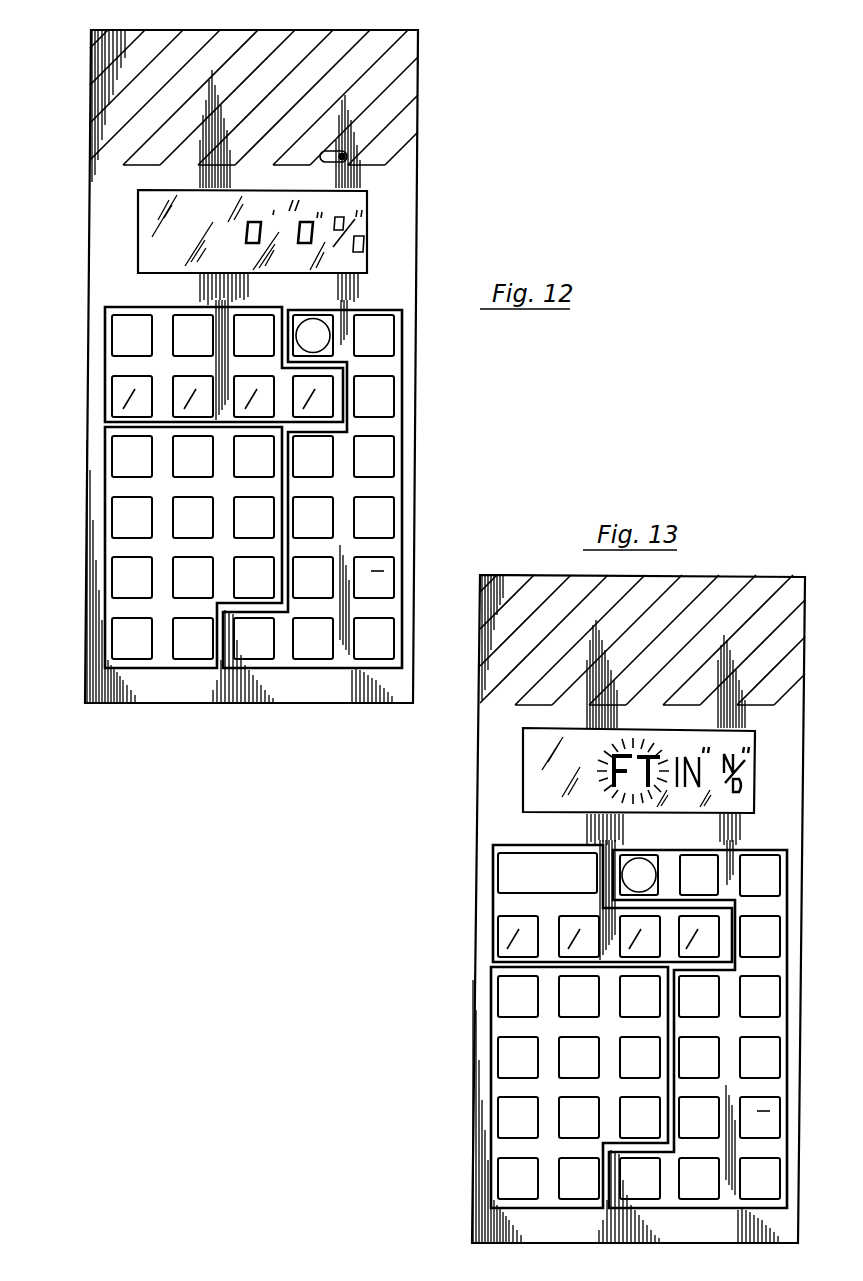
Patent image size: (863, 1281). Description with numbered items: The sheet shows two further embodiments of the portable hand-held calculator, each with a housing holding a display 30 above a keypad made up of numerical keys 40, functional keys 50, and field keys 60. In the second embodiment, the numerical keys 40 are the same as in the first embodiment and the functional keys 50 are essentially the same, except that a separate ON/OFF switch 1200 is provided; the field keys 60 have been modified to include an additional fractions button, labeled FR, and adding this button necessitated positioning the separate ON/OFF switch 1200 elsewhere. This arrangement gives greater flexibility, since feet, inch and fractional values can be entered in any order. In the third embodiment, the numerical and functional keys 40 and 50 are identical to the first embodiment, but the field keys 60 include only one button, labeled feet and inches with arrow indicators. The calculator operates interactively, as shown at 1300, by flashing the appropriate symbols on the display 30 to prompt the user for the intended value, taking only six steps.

In FIG. 12, the display 30 is at (368, 238).
In FIG. 13, the display 30 is at (685, 761).
In FIG. 12, the numerical keys 40 is at (98, 508).
In FIG. 13, the numerical keys 40 is at (490, 1078).
In FIG. 12, the functional keys 50 is at (404, 377).
In FIG. 13, the functional keys 50 is at (785, 950).
In FIG. 12, the field keys 60 is at (98, 353).
In FIG. 13, the field keys 60 is at (492, 899).
In FIG. 12, the ON/OFF switch 1200 is at (394, 158).
In FIG. 13, the interactive flashing indication 1300 is at (629, 737).